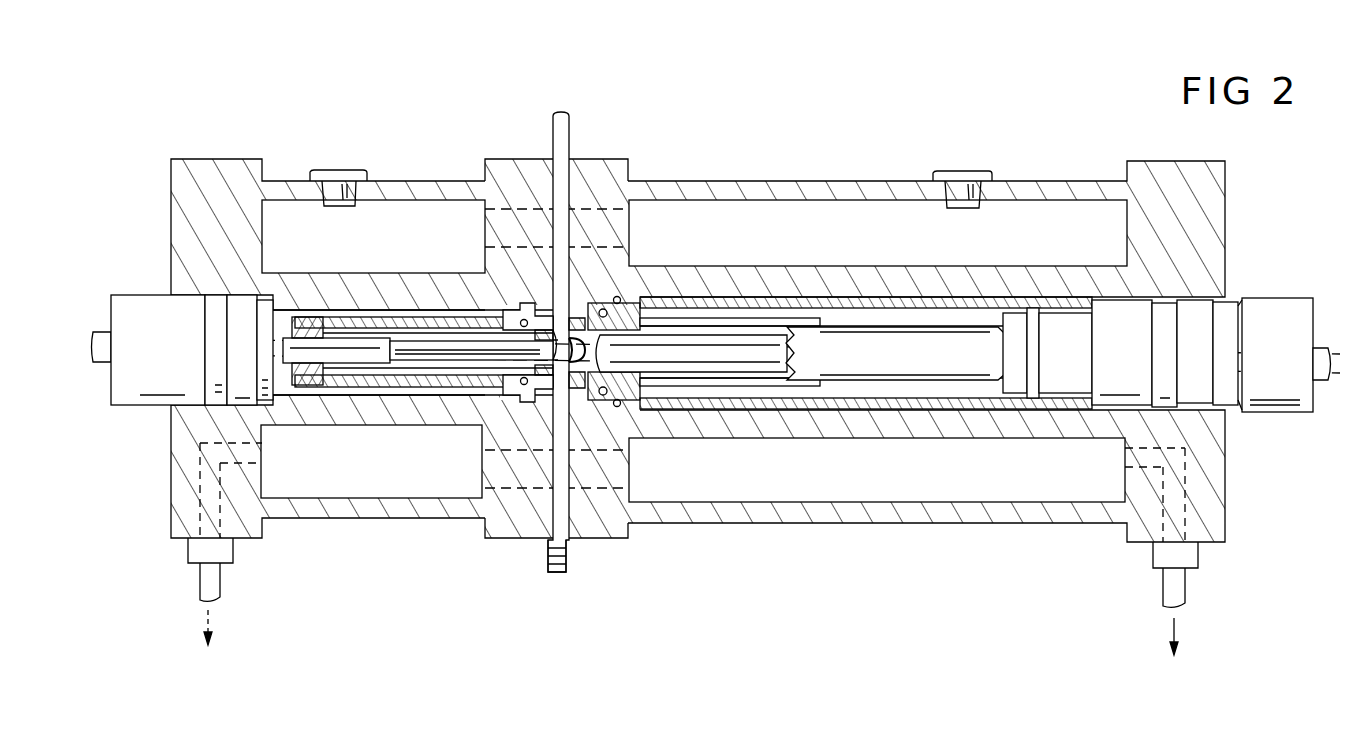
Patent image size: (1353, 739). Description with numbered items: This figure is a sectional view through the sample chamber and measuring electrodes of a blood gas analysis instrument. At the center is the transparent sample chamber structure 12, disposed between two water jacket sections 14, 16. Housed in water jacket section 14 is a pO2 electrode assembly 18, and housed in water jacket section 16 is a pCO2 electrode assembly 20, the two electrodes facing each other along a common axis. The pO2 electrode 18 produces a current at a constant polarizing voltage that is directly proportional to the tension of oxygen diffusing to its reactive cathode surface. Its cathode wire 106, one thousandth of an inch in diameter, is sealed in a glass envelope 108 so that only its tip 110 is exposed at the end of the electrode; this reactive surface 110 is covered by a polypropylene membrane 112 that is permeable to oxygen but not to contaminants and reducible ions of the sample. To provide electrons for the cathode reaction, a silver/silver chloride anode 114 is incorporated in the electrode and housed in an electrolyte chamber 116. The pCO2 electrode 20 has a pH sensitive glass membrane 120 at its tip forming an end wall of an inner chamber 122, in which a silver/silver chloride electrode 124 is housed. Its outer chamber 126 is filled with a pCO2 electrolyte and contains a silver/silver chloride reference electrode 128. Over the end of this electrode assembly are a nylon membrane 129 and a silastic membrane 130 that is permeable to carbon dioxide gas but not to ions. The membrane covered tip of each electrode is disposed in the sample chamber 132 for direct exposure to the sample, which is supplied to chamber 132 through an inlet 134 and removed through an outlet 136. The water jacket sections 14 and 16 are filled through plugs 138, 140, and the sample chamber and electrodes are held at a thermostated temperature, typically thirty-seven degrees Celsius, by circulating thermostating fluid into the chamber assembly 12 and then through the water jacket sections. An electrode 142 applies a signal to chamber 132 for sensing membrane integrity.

The sample chamber structure 12 is at (605, 158).
The water jacket section 14 is at (282, 165).
The water jacket section 16 is at (1080, 175).
The pO2 electrode assembly 18 is at (396, 336).
The pCO2 electrode assembly 20 is at (910, 326).
The cathode wire 106 is at (430, 318).
The glass envelope 108 is at (436, 392).
The tip 110 is at (545, 330).
The polypropylene membrane 112 is at (520, 386).
The silver/silver chloride anode 114 is at (343, 380).
The electrolyte chamber 116 is at (386, 380).
The pH sensitive glass membrane 120 is at (577, 318).
The inner chamber 122 is at (614, 330).
The silver/silver chloride electrode 124 is at (660, 318).
The outer chamber 126 is at (768, 335).
The silver/silver chloride reference electrode 128 is at (770, 386).
The nylon membrane 129 is at (620, 405).
The silastic membrane 130 is at (575, 375).
The sample chamber 132 is at (545, 377).
The inlet 134 is at (553, 372).
The outlet 136 is at (571, 118).
The plug 138 is at (990, 172).
The plug 140 is at (318, 170).
The electrode 142 is at (568, 552).